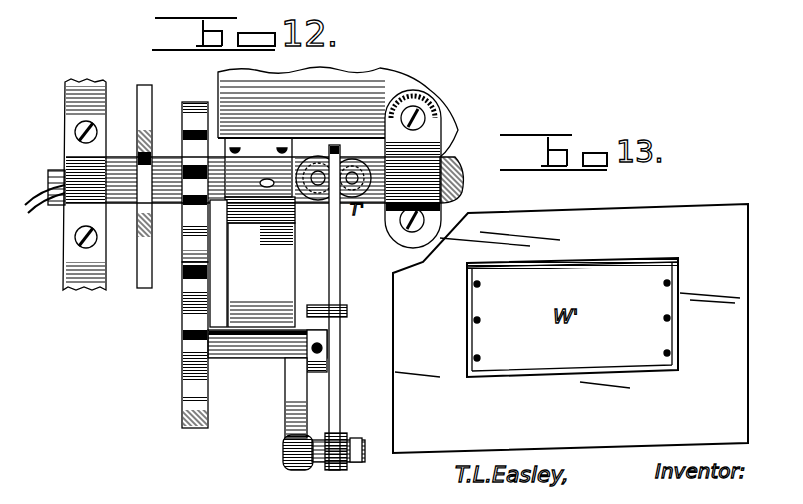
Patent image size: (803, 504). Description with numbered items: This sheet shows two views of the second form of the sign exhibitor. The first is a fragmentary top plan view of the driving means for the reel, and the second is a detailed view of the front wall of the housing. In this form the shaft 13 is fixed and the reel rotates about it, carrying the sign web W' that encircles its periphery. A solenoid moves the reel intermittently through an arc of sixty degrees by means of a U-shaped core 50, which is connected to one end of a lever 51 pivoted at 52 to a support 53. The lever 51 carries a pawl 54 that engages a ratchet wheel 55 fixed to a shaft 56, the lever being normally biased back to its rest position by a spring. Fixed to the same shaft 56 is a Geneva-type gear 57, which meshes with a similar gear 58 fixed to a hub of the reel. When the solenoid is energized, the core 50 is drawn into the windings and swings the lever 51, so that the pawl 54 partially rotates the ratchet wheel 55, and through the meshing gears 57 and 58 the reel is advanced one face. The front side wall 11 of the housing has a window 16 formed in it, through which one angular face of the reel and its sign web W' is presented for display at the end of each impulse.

In FIG. 13, the front side wall 11 is at (676, 213).
In FIG. 12, the shaft 13 is at (65, 168).
In FIG. 13, the window 16 is at (679, 312).
In FIG. 12, the U-shaped core 50 is at (319, 187).
In FIG. 12, the lever 51 is at (342, 264).
In FIG. 12, the pivot 52 is at (362, 443).
In FIG. 12, the support 53 is at (287, 420).
In FIG. 12, the pawl 54 is at (318, 305).
In FIG. 12, the ratchet wheel 55 is at (328, 372).
In FIG. 12, the shaft 56 is at (246, 360).
In FIG. 12, the Geneva-type gear 57 is at (185, 388).
In FIG. 12, the gear 58 is at (193, 102).